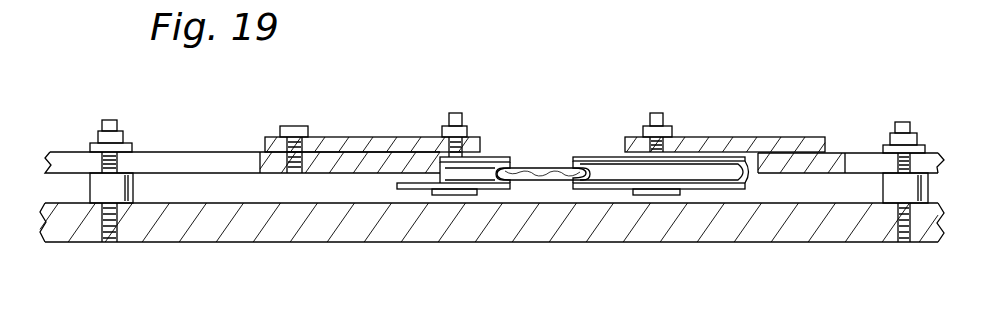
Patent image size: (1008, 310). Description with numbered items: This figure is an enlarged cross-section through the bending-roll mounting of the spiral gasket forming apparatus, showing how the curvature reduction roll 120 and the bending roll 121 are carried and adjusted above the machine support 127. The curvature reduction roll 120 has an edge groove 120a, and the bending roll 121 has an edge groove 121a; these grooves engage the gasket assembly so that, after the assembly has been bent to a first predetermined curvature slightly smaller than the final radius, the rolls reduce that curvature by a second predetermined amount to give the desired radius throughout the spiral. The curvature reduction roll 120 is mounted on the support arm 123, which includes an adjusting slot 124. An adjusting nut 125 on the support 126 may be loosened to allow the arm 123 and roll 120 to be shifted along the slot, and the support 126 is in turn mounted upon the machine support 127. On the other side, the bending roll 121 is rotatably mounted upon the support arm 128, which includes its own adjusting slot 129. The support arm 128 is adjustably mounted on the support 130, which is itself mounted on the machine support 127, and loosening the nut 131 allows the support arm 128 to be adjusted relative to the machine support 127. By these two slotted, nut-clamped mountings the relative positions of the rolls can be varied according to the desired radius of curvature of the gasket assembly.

The curvature reduction roll 120 is at (746, 176).
The edge groove 120a is at (600, 175).
The bending roll 121 is at (403, 178).
The edge groove 121a is at (483, 173).
The support arm 123 is at (712, 140).
The adjusting slot 124 is at (857, 157).
The adjusting nut 125 is at (885, 137).
The support 126 is at (887, 190).
The machine support 127 is at (460, 230).
The support arm 128 is at (338, 140).
The adjusting slot 129 is at (161, 152).
The support 130 is at (117, 188).
The nut 131 is at (98, 142).